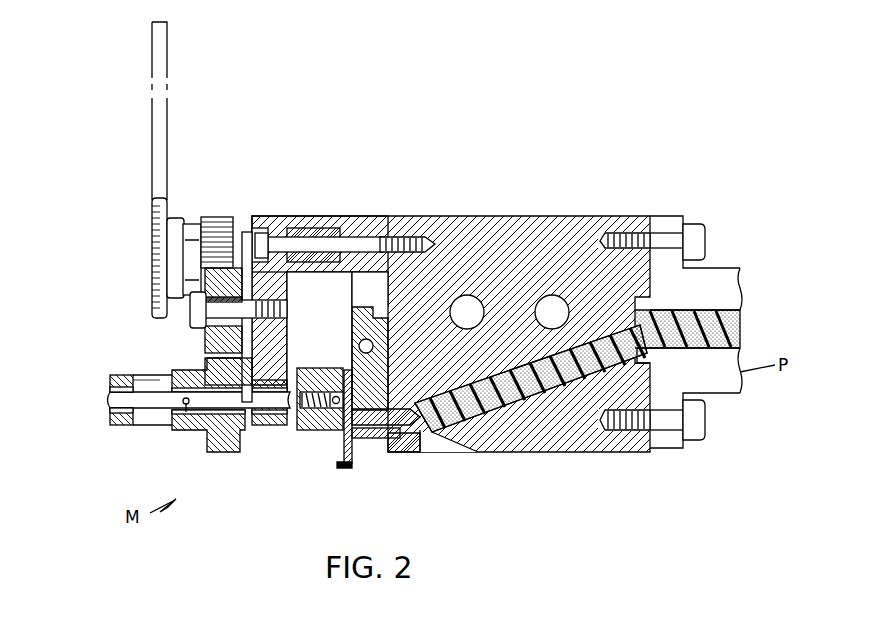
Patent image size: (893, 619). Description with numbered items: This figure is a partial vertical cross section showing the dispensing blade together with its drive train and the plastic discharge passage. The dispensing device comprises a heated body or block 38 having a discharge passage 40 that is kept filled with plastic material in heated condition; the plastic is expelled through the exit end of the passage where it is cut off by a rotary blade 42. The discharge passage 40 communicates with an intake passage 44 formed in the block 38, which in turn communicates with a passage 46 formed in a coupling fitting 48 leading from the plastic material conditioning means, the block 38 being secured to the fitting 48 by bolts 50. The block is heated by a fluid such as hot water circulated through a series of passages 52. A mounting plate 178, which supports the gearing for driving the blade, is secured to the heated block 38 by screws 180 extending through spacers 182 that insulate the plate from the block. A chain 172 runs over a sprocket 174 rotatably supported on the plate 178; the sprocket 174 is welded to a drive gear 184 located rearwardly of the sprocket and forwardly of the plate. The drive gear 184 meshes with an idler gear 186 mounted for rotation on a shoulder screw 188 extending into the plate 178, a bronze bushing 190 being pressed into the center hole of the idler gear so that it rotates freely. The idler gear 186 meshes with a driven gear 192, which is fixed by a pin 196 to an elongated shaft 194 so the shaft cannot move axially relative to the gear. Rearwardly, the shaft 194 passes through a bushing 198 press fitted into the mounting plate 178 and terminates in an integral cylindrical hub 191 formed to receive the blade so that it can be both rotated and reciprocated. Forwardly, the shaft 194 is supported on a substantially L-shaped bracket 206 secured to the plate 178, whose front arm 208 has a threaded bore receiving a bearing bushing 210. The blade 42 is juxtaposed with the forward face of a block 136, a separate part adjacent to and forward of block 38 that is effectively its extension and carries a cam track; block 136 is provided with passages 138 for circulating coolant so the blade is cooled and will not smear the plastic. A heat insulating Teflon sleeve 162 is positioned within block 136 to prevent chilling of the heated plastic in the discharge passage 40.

The block 38 is at (572, 452).
The discharge passage 40 is at (415, 430).
The rotary blade 42 is at (340, 467).
The intake passage 44 is at (505, 405).
The passage 46 is at (740, 330).
The coupling fitting 48 is at (705, 272).
The bolts 50 is at (700, 420).
The passages 52 is at (548, 296).
The block 136 is at (352, 315).
The passages 138 is at (359, 346).
The heat insulating sleeve 162 is at (373, 440).
The chain 172 is at (170, 52).
The sprocket 174 is at (152, 218).
The mounting plate 178 is at (268, 228).
The screws 180 is at (302, 240).
The spacers 182 is at (355, 216).
The drive gear 184 is at (222, 218).
The idler gear 186 is at (205, 340).
The shoulder screw 188 is at (190, 313).
The bronze bushing 190 is at (270, 300).
The cylindrical hub 191 is at (322, 428).
The driven gear 192 is at (225, 450).
The elongated shaft 194 is at (150, 405).
The pin 196 is at (186, 412).
The bushing 198 is at (270, 425).
The L-shaped bracket 206 is at (148, 373).
The front arm 208 is at (110, 385).
The bearing bushing 210 is at (130, 425).